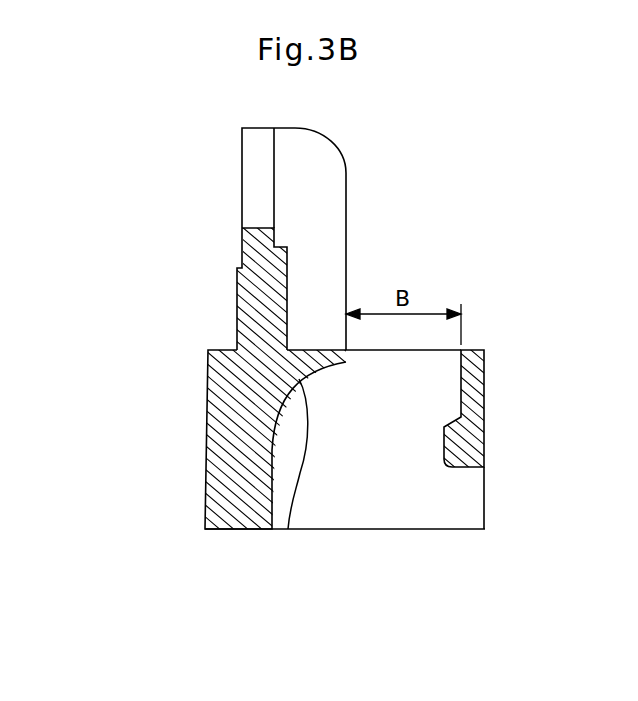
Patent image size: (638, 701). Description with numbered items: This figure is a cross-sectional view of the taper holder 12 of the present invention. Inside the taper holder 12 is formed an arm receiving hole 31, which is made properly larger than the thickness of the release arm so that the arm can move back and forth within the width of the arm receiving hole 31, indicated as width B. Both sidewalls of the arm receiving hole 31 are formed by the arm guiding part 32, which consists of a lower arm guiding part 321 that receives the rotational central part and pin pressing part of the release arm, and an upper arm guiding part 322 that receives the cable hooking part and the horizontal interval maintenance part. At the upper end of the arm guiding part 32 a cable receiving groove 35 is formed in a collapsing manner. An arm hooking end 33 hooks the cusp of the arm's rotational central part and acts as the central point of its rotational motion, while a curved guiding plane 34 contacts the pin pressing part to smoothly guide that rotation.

The taper holder 12 is at (440, 238).
The arm receiving hole 31 is at (352, 500).
The arm guiding part 32 is at (319, 350).
The lower arm guiding part 321 is at (240, 419).
The upper arm guiding part 322 is at (255, 313).
The arm hooking end 33 is at (452, 453).
The guiding plane 34 is at (288, 529).
The cable receiving groove 35 is at (257, 180).